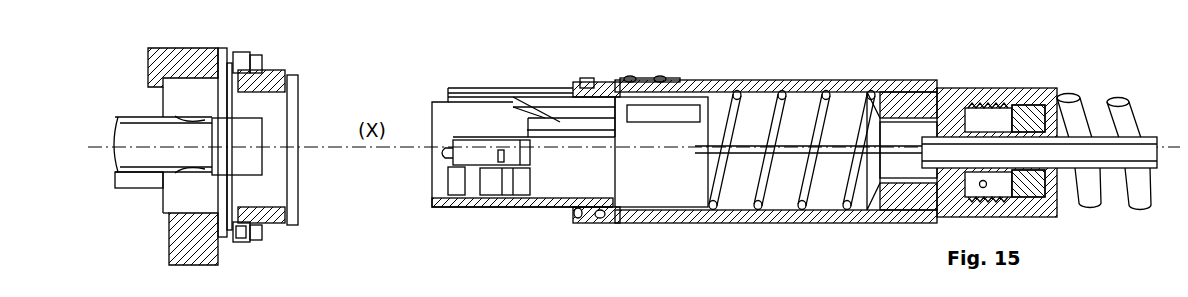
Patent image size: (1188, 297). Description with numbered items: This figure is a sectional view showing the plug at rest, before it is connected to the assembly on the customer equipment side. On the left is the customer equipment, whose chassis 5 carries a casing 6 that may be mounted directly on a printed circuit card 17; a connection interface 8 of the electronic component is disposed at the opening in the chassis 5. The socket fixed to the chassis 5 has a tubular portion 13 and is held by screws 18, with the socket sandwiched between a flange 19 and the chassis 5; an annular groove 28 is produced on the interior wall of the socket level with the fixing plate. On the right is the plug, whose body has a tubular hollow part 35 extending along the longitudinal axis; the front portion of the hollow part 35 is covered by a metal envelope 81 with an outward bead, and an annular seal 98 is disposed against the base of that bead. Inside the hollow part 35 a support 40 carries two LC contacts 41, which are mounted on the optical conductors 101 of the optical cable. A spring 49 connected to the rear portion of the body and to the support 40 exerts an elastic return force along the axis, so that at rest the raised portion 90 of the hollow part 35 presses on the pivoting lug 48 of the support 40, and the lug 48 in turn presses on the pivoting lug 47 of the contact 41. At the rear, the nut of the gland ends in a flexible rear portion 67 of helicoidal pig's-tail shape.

The chassis 5 is at (160, 60).
The casing 6 is at (135, 118).
The printed circuit card 17 is at (118, 178).
The connection interface 8 is at (248, 124).
The annular groove 28 is at (240, 56).
The tubular portion 13 is at (290, 82).
The screws 18 is at (262, 232).
The flange 19 is at (244, 240).
The support 40 is at (568, 183).
The LC contacts 41 is at (468, 153).
The lug 47 is at (505, 138).
The lug 48 is at (548, 118).
The raised portion 90 is at (523, 130).
The annular seal 98 is at (580, 85).
The metal envelope 81 is at (640, 78).
The hollow part 35 is at (775, 220).
The spring 49 is at (808, 190).
The optical conductors 101 is at (750, 140).
The rear portion 67 is at (1140, 210).